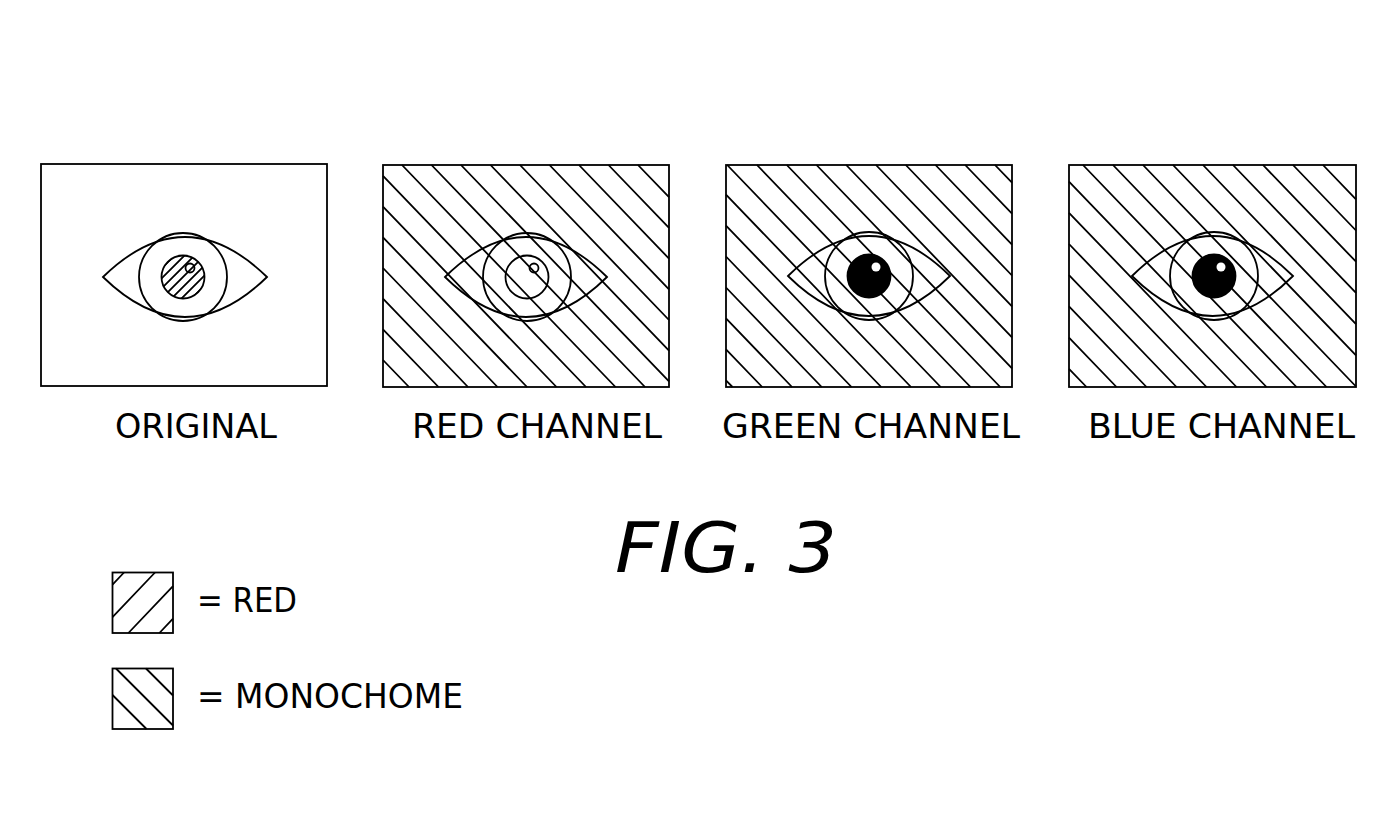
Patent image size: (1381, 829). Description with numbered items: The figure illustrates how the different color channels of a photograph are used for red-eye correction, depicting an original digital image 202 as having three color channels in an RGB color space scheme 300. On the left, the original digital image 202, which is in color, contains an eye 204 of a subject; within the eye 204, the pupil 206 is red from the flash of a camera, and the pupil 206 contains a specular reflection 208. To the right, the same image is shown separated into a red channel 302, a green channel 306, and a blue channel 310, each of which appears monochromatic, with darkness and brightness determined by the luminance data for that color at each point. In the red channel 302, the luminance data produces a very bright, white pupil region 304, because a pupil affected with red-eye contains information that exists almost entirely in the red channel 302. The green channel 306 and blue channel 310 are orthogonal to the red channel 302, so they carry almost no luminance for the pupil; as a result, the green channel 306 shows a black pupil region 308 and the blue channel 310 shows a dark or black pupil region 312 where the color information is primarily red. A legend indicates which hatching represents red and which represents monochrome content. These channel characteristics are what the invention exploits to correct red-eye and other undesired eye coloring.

The RGB color space scheme 300 is at (504, 49).
The digital image 202 is at (163, 164).
The eye 204 is at (183, 235).
The pupil 206 is at (164, 288).
The specular reflection 208 is at (197, 289).
The red channel 302 is at (532, 165).
The pupil region 304 is at (517, 295).
The green channel 306 is at (853, 165).
The pupil region 308 is at (870, 297).
The blue channel 310 is at (1205, 165).
The pupil region 312 is at (1211, 297).